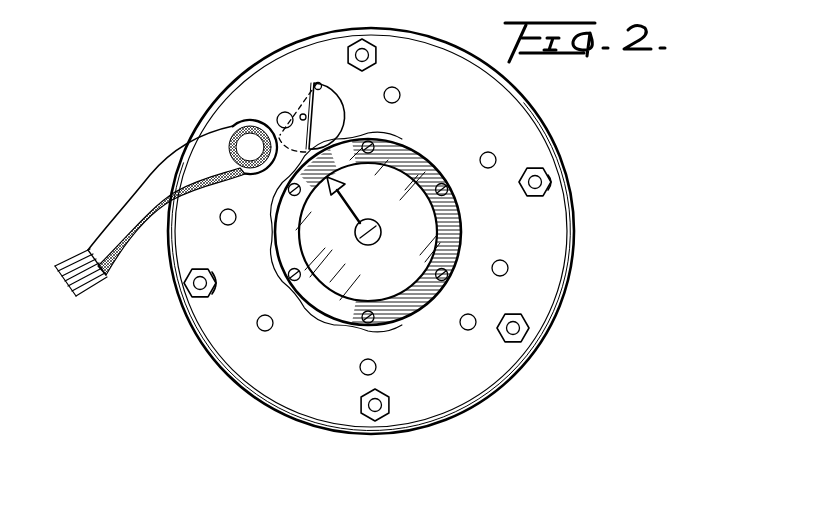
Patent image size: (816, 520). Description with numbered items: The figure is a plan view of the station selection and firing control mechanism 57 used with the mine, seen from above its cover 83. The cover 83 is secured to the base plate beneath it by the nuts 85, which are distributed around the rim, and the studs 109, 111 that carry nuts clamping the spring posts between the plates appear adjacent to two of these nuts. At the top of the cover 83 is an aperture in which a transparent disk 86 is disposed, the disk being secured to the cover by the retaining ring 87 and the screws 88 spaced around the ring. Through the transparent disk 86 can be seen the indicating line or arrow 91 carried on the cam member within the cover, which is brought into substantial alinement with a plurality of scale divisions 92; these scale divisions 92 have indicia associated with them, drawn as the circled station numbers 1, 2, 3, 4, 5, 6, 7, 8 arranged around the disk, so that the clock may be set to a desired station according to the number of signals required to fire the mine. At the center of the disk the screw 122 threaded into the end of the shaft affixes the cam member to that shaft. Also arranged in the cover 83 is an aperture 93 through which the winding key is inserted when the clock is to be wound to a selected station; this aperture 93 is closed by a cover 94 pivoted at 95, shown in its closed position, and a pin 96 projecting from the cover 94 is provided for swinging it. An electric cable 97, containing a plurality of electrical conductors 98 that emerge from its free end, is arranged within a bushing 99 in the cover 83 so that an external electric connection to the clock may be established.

The station selection and firing control mechanism 57 is at (537, 113).
The cover 83 is at (527, 356).
The nuts 85 is at (377, 46).
The stud 111 is at (552, 184).
The stud 109 is at (188, 283).
The aperture 93 is at (333, 87).
The cover 94 is at (336, 97).
The pin 96 is at (317, 82).
The pivot 95 is at (300, 116).
The bushing 99 is at (249, 121).
The electric cable 97 is at (147, 173).
The electrical conductors 98 is at (73, 252).
The transparent disk 86 is at (420, 181).
The retaining ring 87 is at (468, 222).
The indicating line or arrow 91 is at (349, 197).
The screws 88 is at (283, 250).
The scale divisions 92 is at (388, 123).
The screw 122 is at (358, 232).
The position 1 is at (448, 298).
The position 2 is at (368, 326).
The position 3 is at (297, 293).
The position 4 is at (265, 205).
The position 5 is at (308, 150).
The position 6 is at (386, 137).
The position 7 is at (456, 186).
The position 8 is at (462, 258).